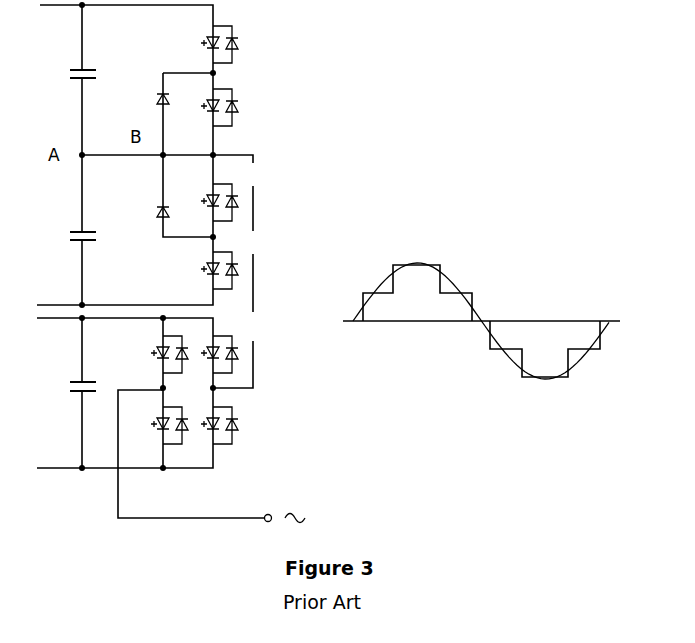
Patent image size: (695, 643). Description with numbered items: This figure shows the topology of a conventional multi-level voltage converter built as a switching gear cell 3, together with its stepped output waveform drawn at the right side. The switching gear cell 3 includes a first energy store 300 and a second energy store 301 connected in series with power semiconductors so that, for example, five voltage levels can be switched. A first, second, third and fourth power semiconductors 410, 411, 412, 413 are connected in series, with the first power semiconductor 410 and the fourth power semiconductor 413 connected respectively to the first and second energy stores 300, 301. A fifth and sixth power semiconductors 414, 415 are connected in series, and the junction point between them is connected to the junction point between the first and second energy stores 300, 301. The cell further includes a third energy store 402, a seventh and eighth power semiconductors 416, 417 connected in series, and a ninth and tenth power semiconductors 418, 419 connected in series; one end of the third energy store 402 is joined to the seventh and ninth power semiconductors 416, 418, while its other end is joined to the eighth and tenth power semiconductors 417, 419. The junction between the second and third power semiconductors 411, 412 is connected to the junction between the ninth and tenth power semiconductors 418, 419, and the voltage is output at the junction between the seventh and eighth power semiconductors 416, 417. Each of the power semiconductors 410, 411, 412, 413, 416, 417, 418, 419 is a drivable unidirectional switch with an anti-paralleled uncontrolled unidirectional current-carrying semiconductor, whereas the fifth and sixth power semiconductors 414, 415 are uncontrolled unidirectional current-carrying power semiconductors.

The first energy store 300 is at (63, 81).
The second energy store 301 is at (63, 239).
The third energy store 402 is at (63, 391).
The first power semiconductor 410 is at (242, 44).
The second power semiconductor 411 is at (242, 107).
The third power semiconductor 412 is at (233, 193).
The fourth power semiconductor 413 is at (237, 261).
The fifth power semiconductor 414 is at (143, 89).
The sixth power semiconductor 415 is at (143, 200).
The seventh power semiconductor 416 is at (148, 353).
The eighth power semiconductor 417 is at (148, 423).
The ninth power semiconductor 418 is at (239, 347).
The tenth power semiconductor 419 is at (238, 425).
The switching gear cell 3 is at (309, 504).